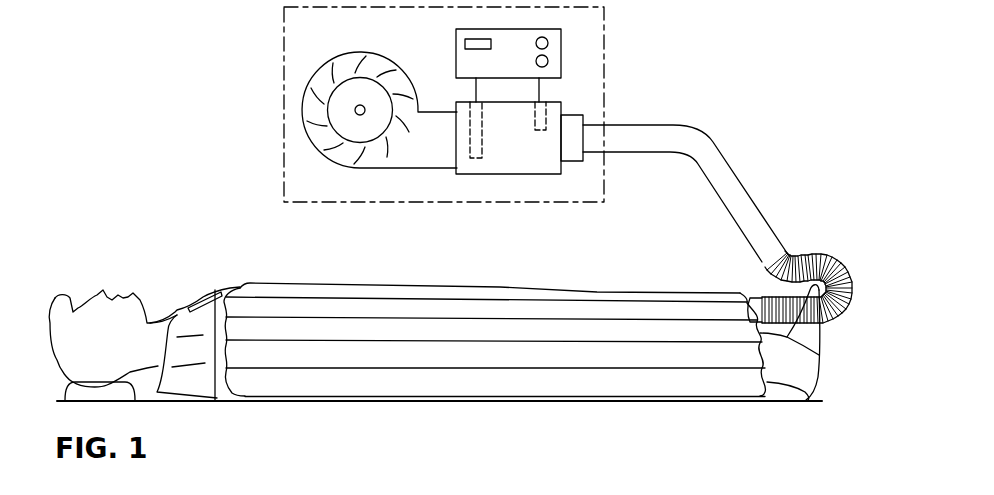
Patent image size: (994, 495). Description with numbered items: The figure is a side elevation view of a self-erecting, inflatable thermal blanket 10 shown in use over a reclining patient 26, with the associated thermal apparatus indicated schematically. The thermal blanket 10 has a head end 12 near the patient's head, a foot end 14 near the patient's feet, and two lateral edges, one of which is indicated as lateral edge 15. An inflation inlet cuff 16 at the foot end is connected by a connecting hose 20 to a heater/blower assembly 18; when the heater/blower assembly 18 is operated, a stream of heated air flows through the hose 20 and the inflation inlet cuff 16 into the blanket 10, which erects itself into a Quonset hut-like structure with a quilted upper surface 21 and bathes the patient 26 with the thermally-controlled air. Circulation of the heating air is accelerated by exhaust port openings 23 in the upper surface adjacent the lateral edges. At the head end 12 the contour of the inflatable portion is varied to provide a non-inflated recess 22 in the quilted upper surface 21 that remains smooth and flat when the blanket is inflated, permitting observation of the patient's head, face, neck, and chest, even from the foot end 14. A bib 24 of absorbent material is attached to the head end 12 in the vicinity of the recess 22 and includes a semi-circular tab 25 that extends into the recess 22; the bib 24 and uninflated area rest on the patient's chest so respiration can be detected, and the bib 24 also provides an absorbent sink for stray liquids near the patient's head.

The thermal blanket 10 is at (698, 406).
The head end 12 is at (462, 334).
The foot end 14 is at (819, 354).
The lateral edge 15 is at (495, 346).
The inflation inlet cuff 16 is at (753, 297).
The heater/blower assembly 18 is at (284, 43).
The connecting hose 20 is at (715, 142).
The quilted upper surface 21 is at (597, 292).
The non-inflated blanket recess 22 is at (240, 287).
The exhaust port openings 23 is at (288, 398).
The bib 24 is at (185, 306).
The semi-circular tab 25 is at (220, 290).
The patient 26 is at (88, 284).